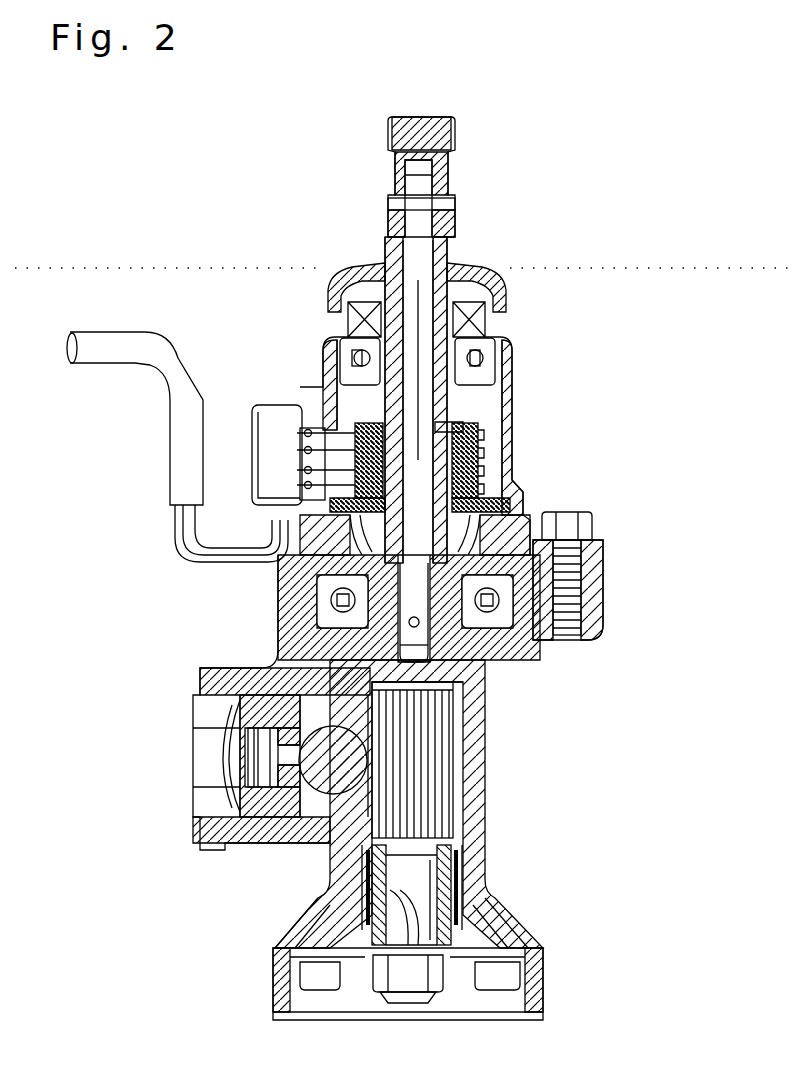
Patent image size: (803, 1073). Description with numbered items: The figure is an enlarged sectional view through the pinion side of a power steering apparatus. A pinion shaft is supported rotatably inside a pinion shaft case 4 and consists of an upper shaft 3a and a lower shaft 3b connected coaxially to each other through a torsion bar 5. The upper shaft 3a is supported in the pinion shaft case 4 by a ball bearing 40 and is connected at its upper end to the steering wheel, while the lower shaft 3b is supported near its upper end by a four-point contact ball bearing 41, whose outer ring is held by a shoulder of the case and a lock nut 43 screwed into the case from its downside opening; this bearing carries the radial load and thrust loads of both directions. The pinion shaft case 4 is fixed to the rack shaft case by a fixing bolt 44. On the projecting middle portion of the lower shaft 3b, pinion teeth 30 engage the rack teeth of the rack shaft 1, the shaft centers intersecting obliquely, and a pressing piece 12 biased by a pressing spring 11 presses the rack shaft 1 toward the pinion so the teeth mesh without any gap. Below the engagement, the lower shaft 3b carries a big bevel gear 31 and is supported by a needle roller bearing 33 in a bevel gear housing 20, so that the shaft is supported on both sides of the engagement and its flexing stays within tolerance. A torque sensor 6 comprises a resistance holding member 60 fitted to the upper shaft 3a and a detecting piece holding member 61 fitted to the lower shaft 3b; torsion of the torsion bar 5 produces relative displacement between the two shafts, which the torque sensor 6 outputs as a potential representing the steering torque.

The rack shaft 1 is at (318, 785).
The upper shaft 3a is at (442, 228).
The lower shaft 3b is at (490, 690).
The pinion shaft case 4 is at (505, 420).
The torsion bar 5 is at (418, 292).
The torque sensor 6 is at (550, 455).
The pressing spring 11 is at (245, 757).
The pressing piece 12 is at (258, 812).
The bevel gear housing 20 is at (290, 948).
The pinion teeth 30 is at (440, 805).
The big bevel gear 31 is at (515, 958).
The needle roller bearing 33 is at (455, 898).
The ball bearing 40 is at (485, 365).
The four-point contact ball bearing 41 is at (515, 622).
The lock nut 43 is at (500, 660).
The fixing bolt 44 is at (590, 520).
The resistance holding member 60 is at (355, 430).
The detecting piece holding member 61 is at (290, 553).